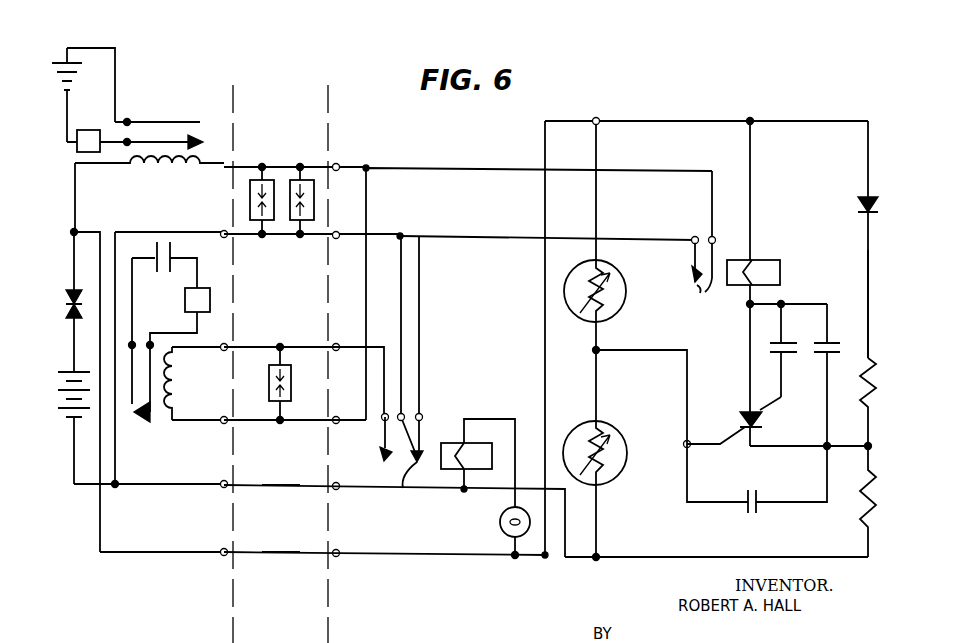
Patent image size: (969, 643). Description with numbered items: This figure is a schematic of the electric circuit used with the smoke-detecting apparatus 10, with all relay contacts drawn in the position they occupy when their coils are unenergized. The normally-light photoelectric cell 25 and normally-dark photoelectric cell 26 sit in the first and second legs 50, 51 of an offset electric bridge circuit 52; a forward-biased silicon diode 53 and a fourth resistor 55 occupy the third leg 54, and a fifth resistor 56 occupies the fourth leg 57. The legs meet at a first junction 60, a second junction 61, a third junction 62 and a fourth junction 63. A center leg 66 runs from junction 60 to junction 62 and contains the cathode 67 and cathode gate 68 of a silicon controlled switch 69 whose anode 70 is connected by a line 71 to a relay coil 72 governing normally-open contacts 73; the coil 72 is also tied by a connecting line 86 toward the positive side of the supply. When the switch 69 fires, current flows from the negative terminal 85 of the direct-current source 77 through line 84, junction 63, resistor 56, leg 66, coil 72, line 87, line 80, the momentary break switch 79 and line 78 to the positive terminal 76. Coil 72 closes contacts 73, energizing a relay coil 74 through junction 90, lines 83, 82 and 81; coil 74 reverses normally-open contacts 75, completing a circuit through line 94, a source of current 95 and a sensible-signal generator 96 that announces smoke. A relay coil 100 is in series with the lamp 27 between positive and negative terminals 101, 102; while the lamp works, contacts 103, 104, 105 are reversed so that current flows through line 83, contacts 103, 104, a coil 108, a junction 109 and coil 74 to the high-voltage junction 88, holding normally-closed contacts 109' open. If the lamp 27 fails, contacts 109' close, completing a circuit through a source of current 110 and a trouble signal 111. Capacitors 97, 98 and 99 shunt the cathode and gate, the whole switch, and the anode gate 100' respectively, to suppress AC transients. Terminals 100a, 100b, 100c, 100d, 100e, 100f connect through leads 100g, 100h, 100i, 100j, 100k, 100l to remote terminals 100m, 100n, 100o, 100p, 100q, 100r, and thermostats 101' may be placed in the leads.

The apparatus 10 is at (428, 570).
The normally-light photoelectric cell 25 is at (628, 437).
The normally-dark photoelectric cell 26 is at (628, 283).
The lamp 27 is at (499, 517).
The first leg 50 is at (598, 527).
The second leg 51 is at (603, 332).
The electric bridge circuit 52 is at (766, 115).
The forward-biased silicon diode 53 is at (866, 204).
The third leg 54 is at (868, 243).
The fourth resistor 55 is at (862, 388).
The fifth resistor 56 is at (862, 512).
The fourth leg 57 is at (667, 557).
The first junction 60 is at (592, 347).
The second junction 61 is at (600, 118).
The third junction 62 is at (867, 442).
The fourth junction 63 is at (592, 559).
The center leg 66 is at (687, 387).
The cathode 67 is at (742, 444).
The cathode gate 68 is at (741, 427).
The silicon controlled switch 69 is at (788, 410).
The anode 70 is at (762, 404).
The line 71 is at (748, 334).
The relay coil 72 is at (782, 271).
The normally-open contacts 73 is at (705, 253).
The relay coil 74 is at (165, 170).
The normally-open contacts 75 is at (165, 142).
The positive terminal 76 is at (84, 356).
The source of direct current 77 is at (88, 392).
The line 78 is at (84, 312).
The momentary break switch 79 is at (72, 316).
The line 80 is at (70, 289).
The line 81 is at (80, 187).
The line 82 is at (468, 238).
The line 83 is at (175, 232).
The line 84 is at (100, 455).
The negative terminal 85 is at (72, 422).
The conductor 86 is at (753, 184).
The line 87 is at (545, 297).
The junction 88 is at (78, 233).
The junction 90 is at (116, 488).
The line 94 is at (92, 47).
The source of current 95 is at (59, 62).
The sensible-signal generator 96 is at (89, 130).
The capacitor 97 is at (745, 506).
The capacitor 98 is at (831, 343).
The capacitor 99 is at (786, 342).
The relay coil 100 is at (478, 454).
The anode gate 100' is at (806, 374).
The terminal 100a is at (339, 491).
The terminal 100b is at (340, 557).
The terminal 100c is at (330, 435).
The terminal 100d is at (333, 379).
The terminal 100e is at (340, 235).
The terminal 100f is at (360, 152).
The lead 100g is at (274, 492).
The lead 100h is at (274, 559).
The lead 100i is at (280, 427).
The lead 100j is at (226, 360).
The lead 100k is at (243, 238).
The lead 100l is at (245, 164).
The terminal 100m is at (220, 489).
The terminal 100n is at (220, 556).
The terminal 100o is at (229, 423).
The terminal 100p is at (228, 345).
The terminal 100q is at (226, 247).
The terminal 100r is at (235, 140).
The positive terminal 101 is at (487, 574).
The thermostat 101' is at (286, 294).
The negative terminal 102 is at (448, 504).
The contact 103 is at (379, 466).
The contact 104 is at (423, 490).
The contact 105 is at (420, 458).
The coil 108 is at (179, 384).
The junction 109 is at (537, 279).
The normally-closed contacts 109' is at (201, 442).
The source of current 110 is at (165, 273).
The trouble signal 111 is at (210, 298).